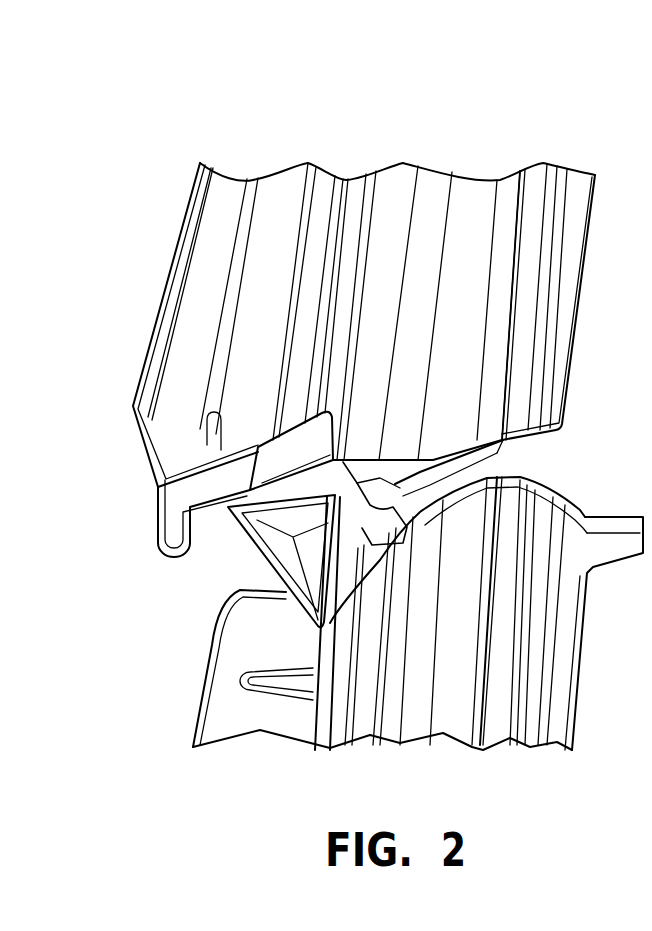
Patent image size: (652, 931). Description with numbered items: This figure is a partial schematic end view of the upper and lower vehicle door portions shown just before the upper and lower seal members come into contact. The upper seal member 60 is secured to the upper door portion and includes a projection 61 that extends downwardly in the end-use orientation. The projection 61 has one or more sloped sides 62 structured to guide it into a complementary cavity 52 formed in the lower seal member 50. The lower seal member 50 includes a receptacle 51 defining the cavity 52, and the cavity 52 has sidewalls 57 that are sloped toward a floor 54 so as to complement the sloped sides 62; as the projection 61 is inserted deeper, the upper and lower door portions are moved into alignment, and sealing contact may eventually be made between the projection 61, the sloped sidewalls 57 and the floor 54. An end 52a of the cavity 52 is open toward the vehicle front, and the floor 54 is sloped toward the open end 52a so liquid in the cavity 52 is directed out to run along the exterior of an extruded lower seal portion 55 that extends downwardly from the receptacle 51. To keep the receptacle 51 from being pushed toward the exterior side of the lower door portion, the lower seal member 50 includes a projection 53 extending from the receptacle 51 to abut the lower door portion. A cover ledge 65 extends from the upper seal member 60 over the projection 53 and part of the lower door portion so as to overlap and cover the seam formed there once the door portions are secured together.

The lower seal member 50 is at (452, 663).
The receptacle 51 is at (467, 517).
The cavity 52 is at (420, 520).
The open end 52a is at (330, 557).
The projection 53 is at (253, 540).
The floor 54 is at (313, 638).
The extruded lower seal portion 55 is at (453, 602).
The sloped sidewall 57 is at (394, 546).
The upper seal member 60 is at (497, 162).
The projection 61 is at (370, 485).
The sloped side 62 is at (470, 467).
The cover ledge 65 is at (173, 530).